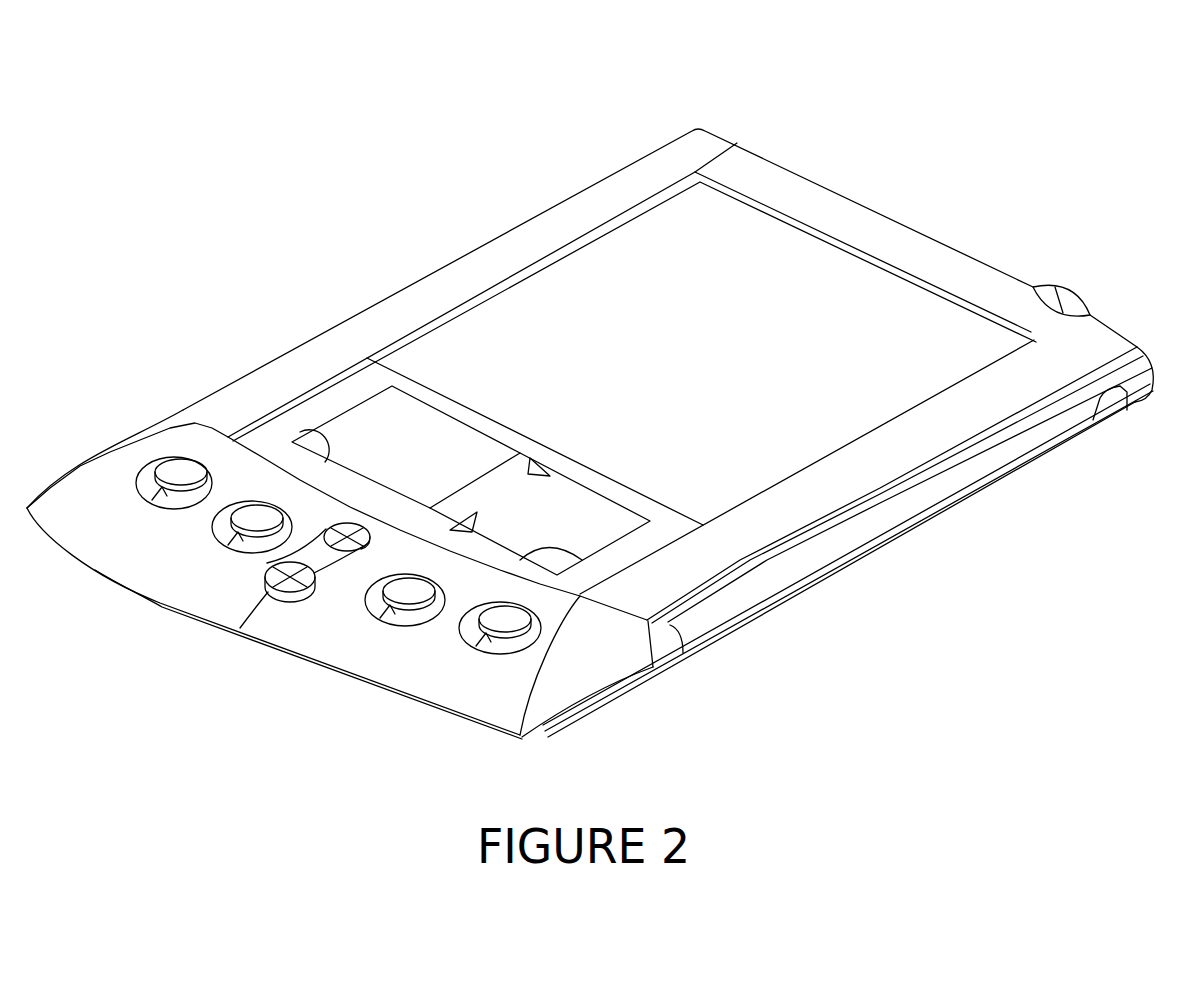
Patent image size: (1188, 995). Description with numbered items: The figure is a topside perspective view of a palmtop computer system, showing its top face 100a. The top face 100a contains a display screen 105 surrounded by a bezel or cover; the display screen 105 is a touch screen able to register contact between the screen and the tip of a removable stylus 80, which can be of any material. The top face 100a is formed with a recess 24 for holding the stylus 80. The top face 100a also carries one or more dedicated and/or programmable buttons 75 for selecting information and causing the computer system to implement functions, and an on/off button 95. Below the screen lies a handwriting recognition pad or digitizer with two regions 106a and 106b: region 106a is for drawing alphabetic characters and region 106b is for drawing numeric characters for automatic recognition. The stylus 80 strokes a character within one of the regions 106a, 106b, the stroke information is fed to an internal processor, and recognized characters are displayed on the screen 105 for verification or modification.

The top face 100a is at (60, 74).
The display screen 105 is at (716, 262).
The region 106a is at (431, 461).
The region 106b is at (582, 534).
The buttons 75 is at (167, 467).
The on/off button 95 is at (1057, 284).
The stylus 80 is at (833, 545).
The recess 24 is at (1006, 477).